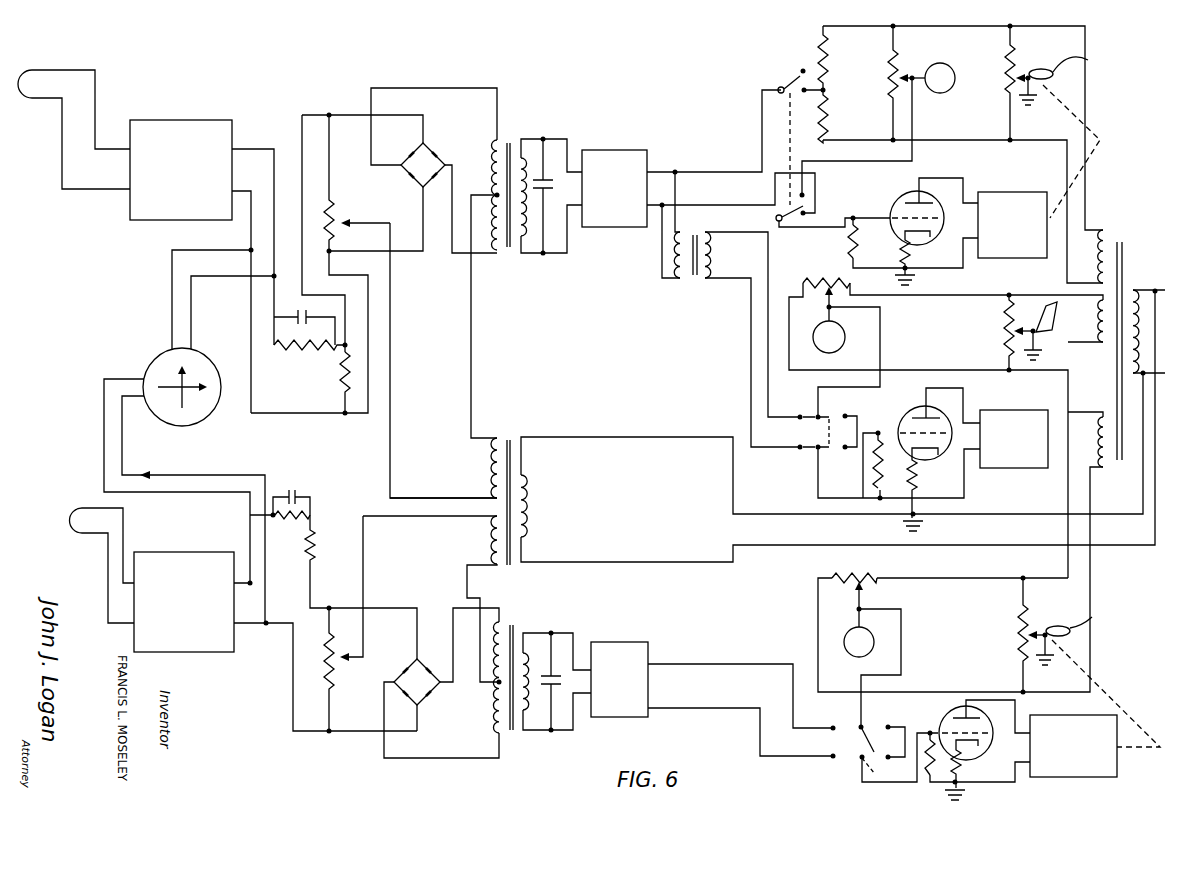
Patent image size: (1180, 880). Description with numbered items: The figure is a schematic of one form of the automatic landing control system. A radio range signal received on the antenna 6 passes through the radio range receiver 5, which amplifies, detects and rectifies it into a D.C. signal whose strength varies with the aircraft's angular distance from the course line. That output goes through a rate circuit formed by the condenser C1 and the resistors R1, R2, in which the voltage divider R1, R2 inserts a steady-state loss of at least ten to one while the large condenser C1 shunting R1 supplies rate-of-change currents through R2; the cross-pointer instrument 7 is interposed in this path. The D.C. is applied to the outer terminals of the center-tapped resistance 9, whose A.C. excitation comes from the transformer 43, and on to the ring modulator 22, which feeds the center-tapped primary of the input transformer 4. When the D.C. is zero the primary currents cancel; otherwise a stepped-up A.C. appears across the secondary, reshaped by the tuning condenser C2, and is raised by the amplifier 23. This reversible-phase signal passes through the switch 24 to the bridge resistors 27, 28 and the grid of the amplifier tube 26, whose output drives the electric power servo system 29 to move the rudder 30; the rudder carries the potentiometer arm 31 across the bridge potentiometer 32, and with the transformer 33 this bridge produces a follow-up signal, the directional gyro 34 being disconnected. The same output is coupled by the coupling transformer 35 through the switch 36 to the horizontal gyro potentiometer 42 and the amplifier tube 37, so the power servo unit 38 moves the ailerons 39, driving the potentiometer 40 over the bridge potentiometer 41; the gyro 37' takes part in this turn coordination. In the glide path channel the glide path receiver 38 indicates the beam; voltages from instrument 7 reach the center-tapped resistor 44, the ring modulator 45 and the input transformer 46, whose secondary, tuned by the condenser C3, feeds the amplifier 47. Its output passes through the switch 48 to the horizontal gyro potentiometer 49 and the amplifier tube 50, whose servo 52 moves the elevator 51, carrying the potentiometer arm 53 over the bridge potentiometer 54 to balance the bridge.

The input transformer 4 is at (511, 140).
The radio range receiver 5 is at (150, 222).
The antenna 6 is at (47, 68).
The cross-pointer instrument 7 is at (205, 418).
The center-tapped resistance 9 is at (342, 221).
The ring modulator 22 is at (430, 148).
The amplifier 23 is at (637, 148).
The switch 24 is at (781, 129).
The amplifier tube 26 is at (895, 200).
The bridge resistor 27 is at (830, 68).
The bridge resistor 28 is at (830, 113).
The electric power servo system 29 is at (1015, 190).
The rudder 30 is at (1071, 151).
The potentiometer arm 31 is at (1017, 78).
The bridge potentiometer 32 is at (990, 66).
The transformer 33 is at (1122, 242).
The directional gyro 34 is at (948, 63).
The coupling transformer 35 is at (684, 285).
The switch 36 is at (797, 452).
The amplifier tube 37 is at (912, 460).
The gyro 37' is at (862, 334).
The glide path receiver 38 is at (1027, 470).
The ailerons 39 is at (1050, 318).
The potentiometer 40 is at (1018, 328).
The bridge potentiometer 41 is at (990, 331).
The horizontal gyro potentiometer 42 is at (813, 280).
The transformer 43 is at (508, 440).
The center-tapped resistor 44 is at (334, 681).
The ring modulator 45 is at (420, 660).
The input transformer 46 is at (516, 633).
The amplifier 47 is at (650, 646).
The switch 48 is at (830, 764).
The horizontal gyro potentiometer 49 is at (830, 577).
The amplifier tube 50 is at (940, 720).
The elevator 51 is at (1090, 636).
The servo 52 is at (1120, 771).
The potentiometer arm 53 is at (1036, 632).
The bridge potentiometer 54 is at (1000, 631).
The condenser C1 is at (304, 318).
The tuning condenser C2 is at (550, 196).
The tuning condenser C3 is at (556, 672).
The resistor R1 is at (309, 359).
The resistor R2 is at (354, 382).